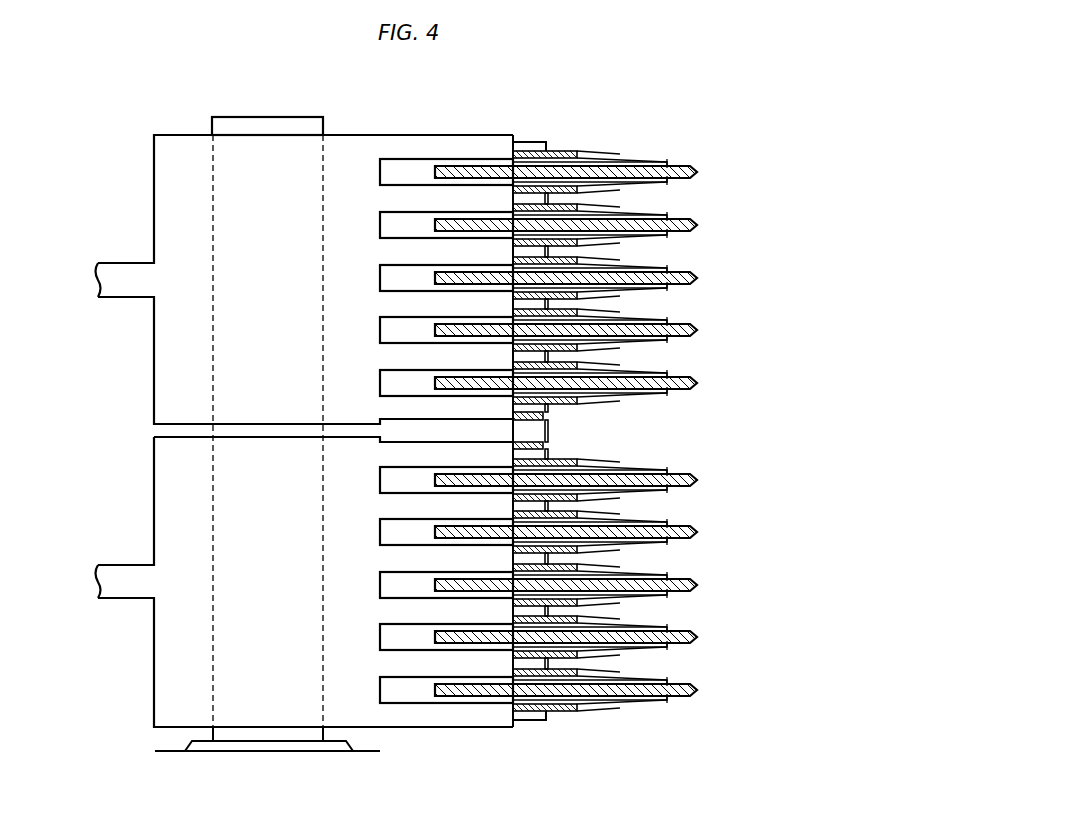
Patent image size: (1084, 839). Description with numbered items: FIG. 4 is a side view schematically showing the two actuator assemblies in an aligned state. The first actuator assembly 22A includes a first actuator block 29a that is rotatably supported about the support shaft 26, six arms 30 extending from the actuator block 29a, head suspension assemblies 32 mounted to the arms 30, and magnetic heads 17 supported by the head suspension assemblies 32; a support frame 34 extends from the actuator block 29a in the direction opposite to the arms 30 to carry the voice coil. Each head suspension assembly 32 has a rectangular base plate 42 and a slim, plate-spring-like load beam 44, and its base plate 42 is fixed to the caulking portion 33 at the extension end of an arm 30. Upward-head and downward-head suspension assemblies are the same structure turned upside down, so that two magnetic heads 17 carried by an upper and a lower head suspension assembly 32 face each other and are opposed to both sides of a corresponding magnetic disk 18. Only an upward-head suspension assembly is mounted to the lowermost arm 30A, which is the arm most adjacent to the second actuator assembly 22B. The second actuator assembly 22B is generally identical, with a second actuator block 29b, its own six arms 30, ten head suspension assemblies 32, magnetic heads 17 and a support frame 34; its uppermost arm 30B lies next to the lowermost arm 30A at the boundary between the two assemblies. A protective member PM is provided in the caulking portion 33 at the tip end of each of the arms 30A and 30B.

The magnetic head 17 is at (652, 163).
The magnetic disk 18 is at (700, 172).
The first actuator assembly 22A is at (284, 270).
The second actuator assembly 22B is at (284, 574).
The support shaft 26 is at (268, 128).
The first actuator block 29a is at (172, 178).
The second actuator block 29b is at (158, 466).
The arm 30 is at (415, 255).
The lowermost arm 30A is at (402, 413).
The uppermost arm 30B is at (402, 450).
The head suspension assembly 32 is at (635, 431).
The caulking portion 33 is at (535, 147).
The support frame 34 is at (126, 282).
The base plate 42 is at (563, 151).
The load beam 44 is at (622, 432).
The protective member PM is at (535, 421).